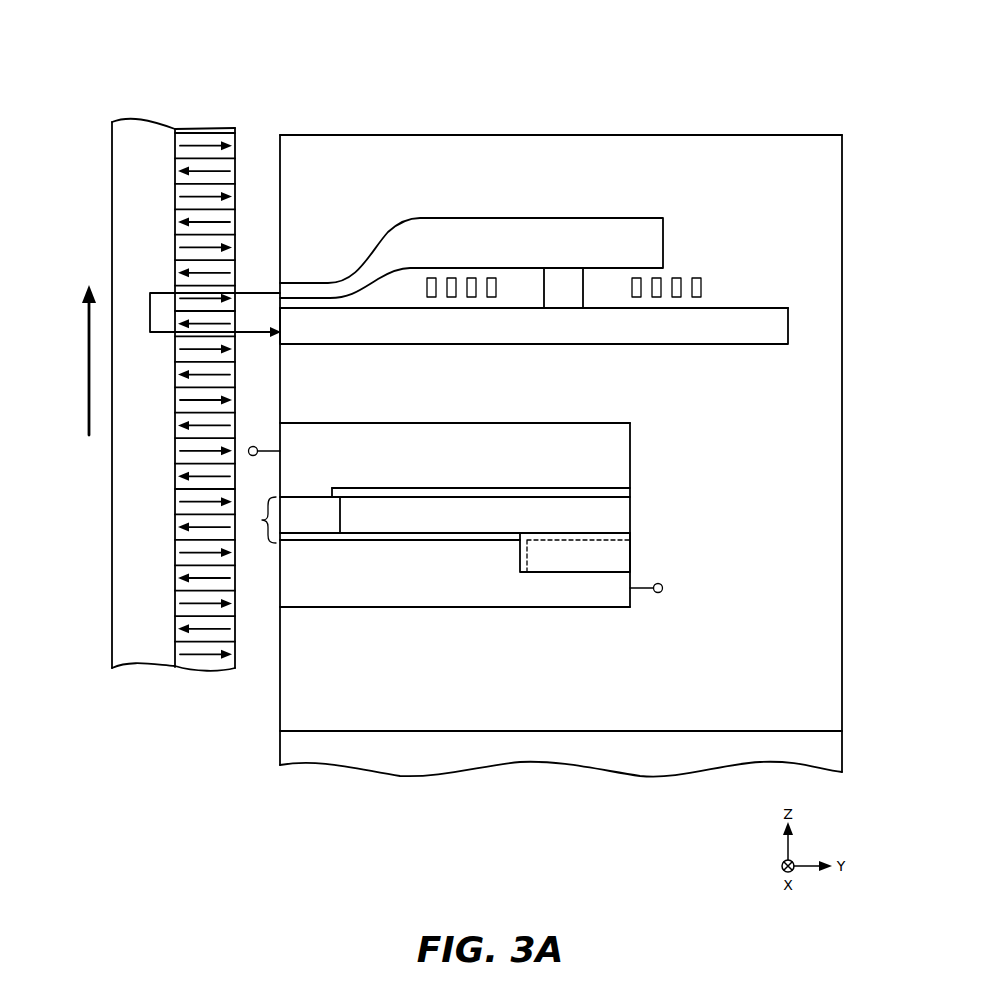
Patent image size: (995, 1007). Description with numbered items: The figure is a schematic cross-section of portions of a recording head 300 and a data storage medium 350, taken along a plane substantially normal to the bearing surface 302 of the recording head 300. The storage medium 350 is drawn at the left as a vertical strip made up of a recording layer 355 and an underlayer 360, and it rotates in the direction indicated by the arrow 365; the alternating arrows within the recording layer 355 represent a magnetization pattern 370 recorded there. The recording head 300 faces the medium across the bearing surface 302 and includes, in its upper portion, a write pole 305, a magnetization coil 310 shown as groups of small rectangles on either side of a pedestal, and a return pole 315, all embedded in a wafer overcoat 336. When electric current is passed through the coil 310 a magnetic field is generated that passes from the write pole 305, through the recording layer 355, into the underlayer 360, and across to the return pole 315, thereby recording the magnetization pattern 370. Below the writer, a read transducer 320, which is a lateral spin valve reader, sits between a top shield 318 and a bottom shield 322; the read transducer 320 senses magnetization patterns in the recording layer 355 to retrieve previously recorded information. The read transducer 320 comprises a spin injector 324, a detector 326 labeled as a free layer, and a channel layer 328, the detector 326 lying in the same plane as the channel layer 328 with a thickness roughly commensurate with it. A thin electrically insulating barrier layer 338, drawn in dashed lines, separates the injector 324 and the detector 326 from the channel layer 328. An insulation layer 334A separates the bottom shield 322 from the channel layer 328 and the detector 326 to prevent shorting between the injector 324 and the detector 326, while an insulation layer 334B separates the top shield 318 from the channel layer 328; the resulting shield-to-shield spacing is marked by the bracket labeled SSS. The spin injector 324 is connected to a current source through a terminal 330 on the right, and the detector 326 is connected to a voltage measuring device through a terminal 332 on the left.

The recording head 300 is at (690, 92).
The bearing surface 302 is at (280, 706).
The write pole 305 is at (330, 289).
The magnetization coil 310 is at (472, 278).
The return pole 315 is at (477, 322).
The top shield 318 is at (543, 444).
The read transducer 320 is at (503, 531).
The bottom shield 322 is at (571, 590).
The spin injector 324 is at (614, 570).
The detector 326 is at (292, 506).
The channel layer 328 is at (367, 537).
The terminal 330 is at (663, 590).
The terminal 332 is at (253, 446).
The insulation layer 334A is at (498, 537).
The insulation layer 334B is at (593, 494).
The wafer overcoat 336 is at (758, 385).
The barrier layer 338 is at (333, 531).
The data storage medium 350 is at (177, 400).
The recording layer 355 is at (213, 353).
The underlayer 360 is at (128, 646).
The arrow 365 is at (89, 367).
The magnetization pattern 370 is at (209, 140).